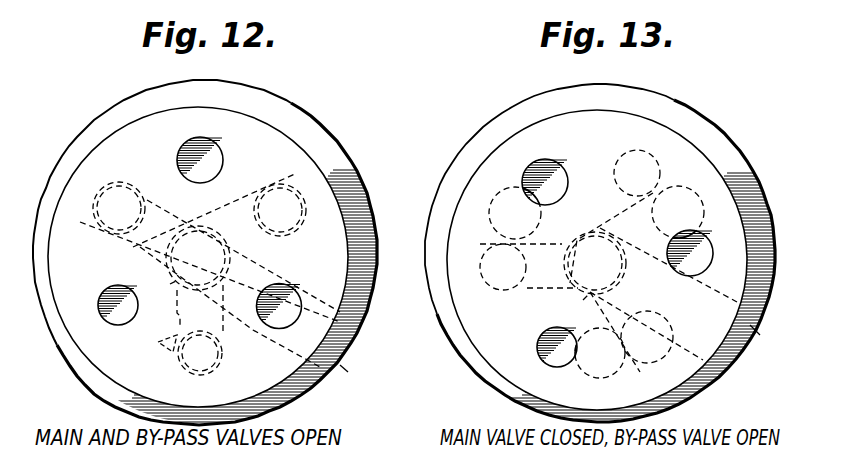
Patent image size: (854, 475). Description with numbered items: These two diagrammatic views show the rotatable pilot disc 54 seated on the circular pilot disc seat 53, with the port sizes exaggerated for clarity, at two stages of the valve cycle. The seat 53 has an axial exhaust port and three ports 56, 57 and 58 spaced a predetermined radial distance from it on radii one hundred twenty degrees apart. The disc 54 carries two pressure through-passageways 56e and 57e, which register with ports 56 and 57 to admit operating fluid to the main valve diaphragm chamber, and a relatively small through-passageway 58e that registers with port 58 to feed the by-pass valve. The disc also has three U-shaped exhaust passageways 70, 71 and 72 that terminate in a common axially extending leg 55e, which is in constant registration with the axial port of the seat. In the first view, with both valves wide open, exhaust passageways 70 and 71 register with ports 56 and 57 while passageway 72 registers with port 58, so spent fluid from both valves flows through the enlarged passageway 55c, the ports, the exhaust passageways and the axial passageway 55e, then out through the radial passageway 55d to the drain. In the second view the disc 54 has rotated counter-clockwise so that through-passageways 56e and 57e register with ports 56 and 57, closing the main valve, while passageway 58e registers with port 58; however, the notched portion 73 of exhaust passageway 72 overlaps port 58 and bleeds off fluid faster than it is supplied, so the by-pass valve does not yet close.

In FIG. 12, the pilot disc seat 53 is at (288, 110).
In FIG. 13, the pilot disc seat 53 is at (427, 241).
In FIG. 12, the pilot disc 54 is at (110, 148).
In FIG. 13, the pilot disc 54 is at (485, 172).
In FIG. 12, the enlarged passageway 55c is at (170, 284).
In FIG. 13, the enlarged passageway 55c is at (583, 300).
In FIG. 12, the radial passageway 55d is at (348, 372).
In FIG. 13, the radial passageway 55d is at (760, 335).
In FIG. 12, the axial passageway 55e is at (195, 224).
In FIG. 13, the axial passageway 55e is at (587, 233).
In FIG. 12, the port 56 is at (80, 222).
In FIG. 13, the port 56 is at (490, 204).
In FIG. 12, the through-passageway 56e is at (185, 147).
In FIG. 13, the through-passageway 56e is at (530, 172).
In FIG. 12, the port 57 is at (290, 178).
In FIG. 13, the port 57 is at (690, 187).
In FIG. 12, the through-passageway 57e is at (300, 310).
In FIG. 13, the through-passageway 57e is at (706, 242).
In FIG. 12, the port 58 is at (222, 368).
In FIG. 13, the port 58 is at (597, 376).
In FIG. 12, the through-passageway 58e is at (105, 312).
In FIG. 13, the through-passageway 58e is at (553, 356).
In FIG. 12, the U-shaped exhaust passageway 70 is at (133, 247).
In FIG. 13, the U-shaped exhaust passageway 70 is at (525, 292).
In FIG. 12, the U-shaped exhaust passageway 71 is at (205, 230).
In FIG. 13, the U-shaped exhaust passageway 71 is at (607, 200).
In FIG. 12, the U-shaped exhaust passageway 72 is at (177, 322).
In FIG. 13, the U-shaped exhaust passageway 72 is at (643, 290).
In FIG. 12, the notched portion 73 is at (160, 352).
In FIG. 13, the notched portion 73 is at (626, 339).